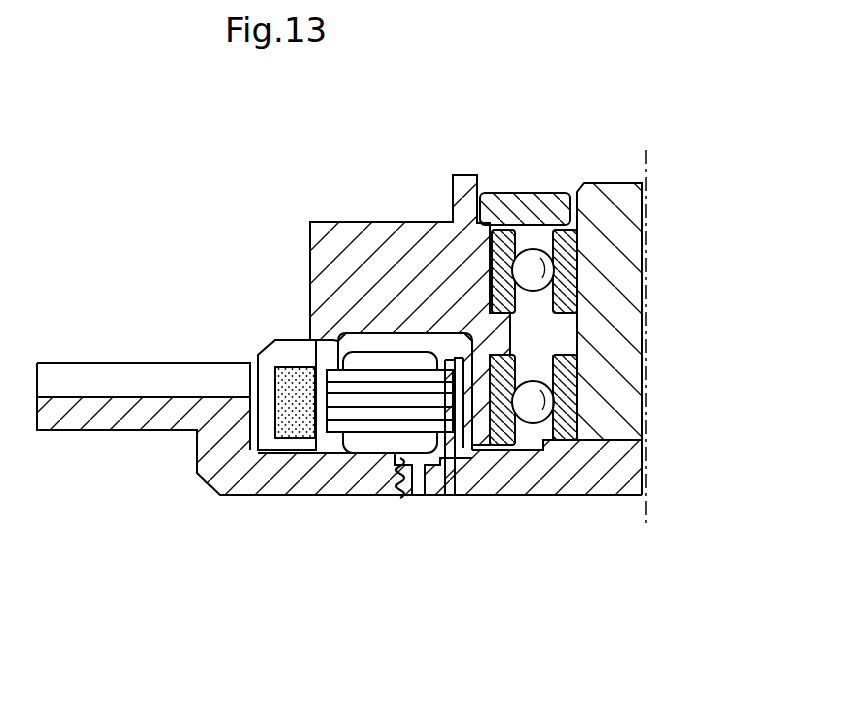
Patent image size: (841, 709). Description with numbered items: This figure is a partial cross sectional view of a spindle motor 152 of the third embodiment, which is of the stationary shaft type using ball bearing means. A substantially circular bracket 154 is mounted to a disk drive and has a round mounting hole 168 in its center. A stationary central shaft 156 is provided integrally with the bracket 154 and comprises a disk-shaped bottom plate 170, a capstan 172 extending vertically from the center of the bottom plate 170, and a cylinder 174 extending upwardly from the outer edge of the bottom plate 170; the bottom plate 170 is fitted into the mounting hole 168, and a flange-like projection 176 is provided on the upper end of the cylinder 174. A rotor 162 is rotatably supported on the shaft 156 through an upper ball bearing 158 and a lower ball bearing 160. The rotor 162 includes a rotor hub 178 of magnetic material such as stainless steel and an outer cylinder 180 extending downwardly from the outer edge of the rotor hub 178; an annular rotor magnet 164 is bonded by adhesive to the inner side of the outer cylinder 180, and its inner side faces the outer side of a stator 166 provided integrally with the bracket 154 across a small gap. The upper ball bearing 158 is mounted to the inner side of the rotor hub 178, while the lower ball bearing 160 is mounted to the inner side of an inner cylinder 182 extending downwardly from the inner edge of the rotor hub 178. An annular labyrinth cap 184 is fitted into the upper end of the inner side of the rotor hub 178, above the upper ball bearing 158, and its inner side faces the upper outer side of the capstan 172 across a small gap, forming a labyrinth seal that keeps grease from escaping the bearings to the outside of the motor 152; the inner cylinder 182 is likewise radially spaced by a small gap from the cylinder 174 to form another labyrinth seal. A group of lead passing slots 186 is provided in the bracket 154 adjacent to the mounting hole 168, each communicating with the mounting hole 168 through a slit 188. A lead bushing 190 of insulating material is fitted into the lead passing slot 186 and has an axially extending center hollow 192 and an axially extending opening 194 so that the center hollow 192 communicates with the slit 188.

The spindle motor 152 is at (312, 127).
The bracket 154 is at (197, 473).
The stationary central shaft 156 is at (647, 168).
The upper ball bearing 158 is at (538, 232).
The lower ball bearing 160 is at (577, 433).
The rotor 162 is at (305, 222).
The rotor magnet 164 is at (287, 383).
The stator 166 is at (337, 370).
The mounting hole 168 is at (460, 470).
The bottom plate 170 is at (612, 495).
The capstan 172 is at (632, 219).
The cylinder 174 is at (498, 446).
The flange-like projection 176 is at (455, 350).
The rotor hub 178 is at (355, 230).
The outer cylinder 180 is at (268, 428).
The inner cylinder 182 is at (528, 430).
The labyrinth cap 184 is at (505, 194).
The lead passing slot 186 is at (407, 468).
The slit 188 is at (446, 498).
The lead bushing 190 is at (393, 462).
The center hollow 192 is at (420, 466).
The opening 194 is at (430, 478).